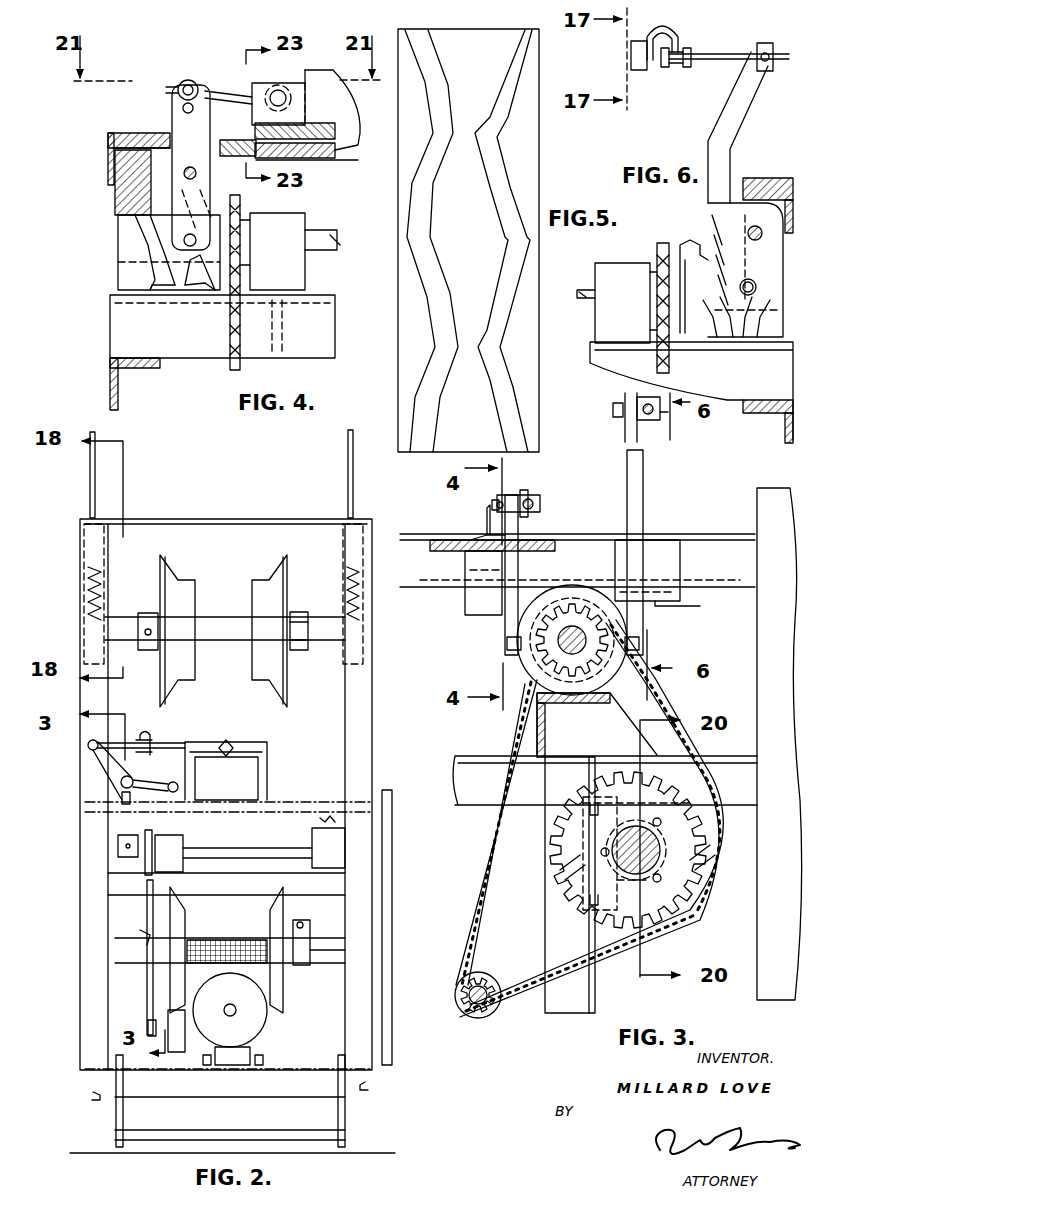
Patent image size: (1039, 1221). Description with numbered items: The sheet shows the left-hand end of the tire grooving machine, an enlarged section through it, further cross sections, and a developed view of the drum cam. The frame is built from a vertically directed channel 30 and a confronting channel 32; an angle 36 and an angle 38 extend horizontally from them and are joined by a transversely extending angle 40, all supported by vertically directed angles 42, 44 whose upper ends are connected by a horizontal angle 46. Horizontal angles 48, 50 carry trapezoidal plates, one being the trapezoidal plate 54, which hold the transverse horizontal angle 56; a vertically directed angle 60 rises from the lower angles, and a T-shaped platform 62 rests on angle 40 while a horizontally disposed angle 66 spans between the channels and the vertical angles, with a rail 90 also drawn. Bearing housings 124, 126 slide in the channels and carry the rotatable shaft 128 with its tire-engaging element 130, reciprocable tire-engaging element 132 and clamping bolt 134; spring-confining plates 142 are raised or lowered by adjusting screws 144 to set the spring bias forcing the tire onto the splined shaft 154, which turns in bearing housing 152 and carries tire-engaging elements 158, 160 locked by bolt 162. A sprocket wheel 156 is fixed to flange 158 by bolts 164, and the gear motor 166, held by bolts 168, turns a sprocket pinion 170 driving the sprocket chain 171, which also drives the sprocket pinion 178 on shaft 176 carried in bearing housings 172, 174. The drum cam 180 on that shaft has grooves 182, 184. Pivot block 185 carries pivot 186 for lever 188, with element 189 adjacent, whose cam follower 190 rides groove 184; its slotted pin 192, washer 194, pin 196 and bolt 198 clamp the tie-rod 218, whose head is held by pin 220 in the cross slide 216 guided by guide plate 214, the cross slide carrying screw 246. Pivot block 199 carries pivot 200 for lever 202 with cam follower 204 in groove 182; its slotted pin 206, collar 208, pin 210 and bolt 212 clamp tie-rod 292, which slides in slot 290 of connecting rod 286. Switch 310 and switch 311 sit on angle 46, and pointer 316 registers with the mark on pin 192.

In FIG. 2, the vertically directed channel 30 is at (360, 738).
In FIG. 2, the vertically directed channel 32 is at (90, 788).
In FIG. 3, the vertically directed channel 32 is at (770, 935).
In FIG. 2, the angle 36 is at (370, 1087).
In FIG. 2, the angle 38 is at (92, 1097).
In FIG. 2, the transversely extending angle 40 is at (268, 1097).
In FIG. 2, the vertically directed angle 42 is at (90, 1128).
In FIG. 2, the vertically directed angle 44 is at (372, 1125).
In FIG. 2, the horizontal angle 46 is at (298, 810).
In FIG. 2, the horizontal angle 48 is at (365, 918).
In FIG. 3, the horizontal angle 48 is at (409, 913).
In FIG. 4, the horizontal angle 50 is at (110, 390).
In FIG. 6, the horizontal angle 50 is at (788, 443).
In FIG. 2, the horizontal angle 50 is at (95, 922).
In FIG. 3, the horizontal angle 50 is at (470, 805).
In FIG. 4, the trapezoidal plate 54 is at (110, 337).
In FIG. 6, the trapezoidal plate 54 is at (795, 382).
In FIG. 3, the trapezoidal plate 54 is at (537, 720).
In FIG. 4, the horizontal angle 56 is at (305, 358).
In FIG. 6, the horizontal angle 56 is at (748, 413).
In FIG. 2, the horizontal angle 56 is at (244, 895).
In FIG. 3, the horizontal angle 56 is at (560, 703).
In FIG. 3, the vertically directed angle 60 is at (572, 1013).
In FIG. 2, the T-shaped platform 62 is at (298, 1068).
In FIG. 4, the horizontally disposed angle 66 is at (108, 155).
In FIG. 6, the horizontally disposed angle 66 is at (788, 180).
In FIG. 3, the horizontally disposed angle 66 is at (708, 534).
In FIG. 2, the rail 90 is at (200, 1127).
In FIG. 3, the rail 90 is at (409, 1017).
In FIG. 2, the bearing housing 124 is at (132, 652).
In FIG. 2, the bearing housing 126 is at (363, 655).
In FIG. 2, the rotatable shaft 128 is at (218, 617).
In FIG. 2, the tire-engaging element 130 is at (192, 678).
In FIG. 2, the reciprocable tire-engaging element 132 is at (283, 685).
In FIG. 2, the bolt 134 is at (302, 612).
In FIG. 2, the spring-confining plate 142 is at (103, 568).
In FIG. 2, the adjusting screw 144 is at (90, 488).
In FIG. 3, the bearing housing 152 is at (648, 900).
In FIG. 2, the shaft 154 is at (322, 960).
In FIG. 3, the shaft 154 is at (662, 852).
In FIG. 3, the sprocket wheel 156 is at (552, 872).
In FIG. 2, the tire-engaging element 158 is at (186, 920).
In FIG. 2, the tire-engaging element 160 is at (285, 1005).
In FIG. 2, the bolt 162 is at (302, 920).
In FIG. 2, the bolt 164 is at (140, 930).
In FIG. 3, the bolt 164 is at (657, 822).
In FIG. 2, the gear motor 166 is at (217, 1019).
In FIG. 2, the bolt 168 is at (262, 1050).
In FIG. 2, the sprocket pinion 170 is at (148, 1022).
In FIG. 3, the sprocket pinion 170 is at (492, 985).
In FIG. 4, the sprocket chain 171 is at (230, 368).
In FIG. 6, the sprocket chain 171 is at (670, 372).
In FIG. 2, the sprocket chain 171 is at (147, 988).
In FIG. 3, the sprocket chain 171 is at (528, 1003).
In FIG. 4, the bearing housing 172 is at (302, 218).
In FIG. 6, the bearing housing 172 is at (608, 272).
In FIG. 2, the bearing housing 172 is at (178, 853).
In FIG. 2, the bearing housing 174 is at (380, 853).
In FIG. 4, the rotatable shaft 176 is at (338, 240).
In FIG. 6, the rotatable shaft 176 is at (583, 300).
In FIG. 2, the rotatable shaft 176 is at (244, 850).
In FIG. 3, the rotatable shaft 176 is at (574, 626).
In FIG. 4, the sprocket pinion 178 is at (243, 210).
In FIG. 6, the sprocket pinion 178 is at (655, 262).
In FIG. 2, the sprocket pinion 178 is at (148, 872).
In FIG. 3, the sprocket pinion 178 is at (588, 672).
In FIG. 4, the drum cam 180 is at (118, 265).
In FIG. 5, the drum cam 180 is at (530, 178).
In FIG. 6, the drum cam 180 is at (784, 322).
In FIG. 2, the drum cam 180 is at (112, 878).
In FIG. 3, the drum cam 180 is at (548, 600).
In FIG. 4, the groove 182 is at (135, 240).
In FIG. 5, the groove 182 is at (427, 387).
In FIG. 6, the groove 182 is at (755, 340).
In FIG. 4, the groove 184 is at (190, 295).
In FIG. 5, the groove 184 is at (507, 412).
In FIG. 6, the groove 184 is at (698, 243).
In FIG. 4, the pivot block 185 is at (125, 185).
In FIG. 3, the pivot block 185 is at (468, 615).
In FIG. 4, the pivot 186 is at (198, 171).
In FIG. 3, the pivot 186 is at (480, 585).
In FIG. 4, the lever 188 is at (174, 122).
In FIG. 2, the lever 188 is at (118, 845).
In FIG. 3, the lever 188 is at (507, 655).
In FIG. 4, the pin 189 is at (182, 108).
In FIG. 3, the pin 189 is at (518, 522).
In FIG. 4, the cam follower 190 is at (198, 240).
In FIG. 3, the cam follower 190 is at (505, 640).
In FIG. 4, the slotted pin 192 is at (184, 82).
In FIG. 3, the slotted pin 192 is at (526, 492).
In FIG. 4, the washer 194 is at (192, 82).
In FIG. 3, the washer 194 is at (498, 502).
In FIG. 3, the pin 196 is at (492, 506).
In FIG. 3, the bolt 198 is at (540, 498).
In FIG. 3, the pivot block 199 is at (680, 570).
In FIG. 6, the pivot 200 is at (762, 230).
In FIG. 3, the pivot 200 is at (680, 607).
In FIG. 6, the lever 202 is at (738, 132).
In FIG. 2, the lever 202 is at (95, 770).
In FIG. 3, the lever 202 is at (636, 508).
In FIG. 6, the cam follower 204 is at (757, 287).
In FIG. 3, the cam follower 204 is at (643, 643).
In FIG. 6, the slotted pin 206 is at (773, 66).
In FIG. 6, the collar 208 is at (623, 420).
In FIG. 6, the pin 210 is at (613, 409).
In FIG. 6, the bolt 212 is at (772, 43).
In FIG. 4, the guide plate 214 is at (243, 140).
In FIG. 3, the guide plate 214 is at (440, 551).
In FIG. 4, the cross slide 216 is at (348, 118).
In FIG. 2, the cross slide 216 is at (265, 770).
In FIG. 4, the tie-rod 218 is at (226, 93).
In FIG. 2, the tie-rod 218 is at (155, 780).
In FIG. 3, the tie-rod 218 is at (515, 512).
In FIG. 4, the pin 220 is at (279, 89).
In FIG. 2, the pin 220 is at (180, 788).
In FIG. 2, the screw 246 is at (226, 740).
In FIG. 6, the connecting rod 286 is at (678, 30).
In FIG. 2, the connecting rod 286 is at (190, 736).
In FIG. 6, the slot 290 is at (672, 68).
In FIG. 6, the tie-rod 292 is at (707, 60).
In FIG. 2, the tie-rod 292 is at (140, 742).
In FIG. 2, the switch 310 is at (333, 818).
In FIG. 2, the switch 311 is at (312, 850).
In FIG. 2, the pointer 316 is at (120, 798).
In FIG. 3, the pointer 316 is at (485, 520).